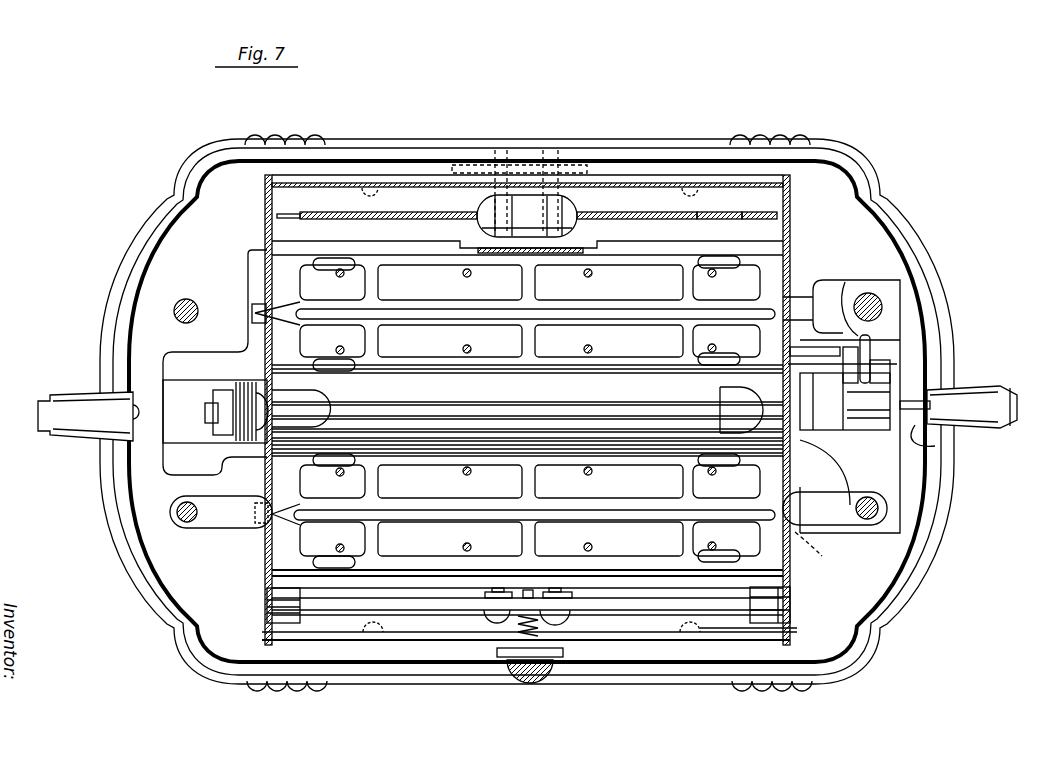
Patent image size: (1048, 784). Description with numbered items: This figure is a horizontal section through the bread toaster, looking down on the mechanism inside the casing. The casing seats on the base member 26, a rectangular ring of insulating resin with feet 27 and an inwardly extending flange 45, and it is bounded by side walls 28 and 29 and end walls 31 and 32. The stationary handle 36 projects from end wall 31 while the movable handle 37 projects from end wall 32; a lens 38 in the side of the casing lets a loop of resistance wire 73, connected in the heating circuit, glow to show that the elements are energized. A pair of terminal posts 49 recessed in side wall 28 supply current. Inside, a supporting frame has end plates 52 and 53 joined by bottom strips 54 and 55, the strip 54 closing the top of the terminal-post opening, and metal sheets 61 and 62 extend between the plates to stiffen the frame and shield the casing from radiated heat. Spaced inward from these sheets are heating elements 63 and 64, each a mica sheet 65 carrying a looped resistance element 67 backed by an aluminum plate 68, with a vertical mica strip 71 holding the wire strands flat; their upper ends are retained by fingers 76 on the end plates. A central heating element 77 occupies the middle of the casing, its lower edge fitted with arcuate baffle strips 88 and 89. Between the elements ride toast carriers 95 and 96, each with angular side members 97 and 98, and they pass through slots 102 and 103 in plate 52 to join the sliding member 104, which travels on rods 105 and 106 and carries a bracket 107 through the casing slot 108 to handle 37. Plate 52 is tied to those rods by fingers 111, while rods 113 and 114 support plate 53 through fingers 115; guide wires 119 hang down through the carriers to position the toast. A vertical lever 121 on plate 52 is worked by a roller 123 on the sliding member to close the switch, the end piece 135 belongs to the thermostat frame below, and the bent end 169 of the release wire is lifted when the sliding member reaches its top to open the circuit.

The base member 26 is at (410, 684).
The feet 27 is at (318, 133).
The side wall 28 is at (620, 160).
The side wall 29 is at (630, 663).
The end wall 31 is at (112, 335).
The end wall 32 is at (927, 316).
The handle 36 is at (88, 416).
The handle 37 is at (980, 392).
The lens 38 is at (530, 678).
The flange 45 is at (215, 362).
The terminal posts 49 is at (552, 150).
The end plate 52 is at (790, 238).
The end plate 53 is at (265, 234).
The bottom strip 54 is at (722, 192).
The bottom strip 55 is at (718, 627).
The metal sheet 61 is at (397, 183).
The metal sheet 62 is at (350, 642).
The heating element 63 is at (440, 212).
The heating element 64 is at (352, 604).
The mica sheet 65 is at (650, 220).
The resistance element 67 is at (700, 222).
The metal plate 68 is at (608, 214).
The mica strip 71 is at (578, 226).
The loop of resistance wire 73 is at (560, 632).
The fingers 76 is at (778, 593).
The central heating element 77 is at (425, 410).
The baffle strip 88 is at (495, 430).
The baffle strip 89 is at (527, 418).
The toast carrier 95 is at (710, 306).
The toast carrier 96 is at (728, 512).
The side member 97 is at (522, 284).
The side member 98 is at (522, 344).
The slot 102 is at (790, 290).
The slot 103 is at (812, 546).
The sliding member 104 is at (900, 480).
The rod 105 is at (872, 296).
The rod 106 is at (855, 509).
The bracket 107 is at (935, 447).
The slot 108 is at (930, 406).
The fingers 111 is at (860, 525).
The rod 113 is at (188, 522).
The rod 114 is at (184, 323).
The fingers 115 is at (221, 512).
The guide wires 119 is at (590, 345).
The lever 121 is at (812, 348).
The roller 123 is at (945, 356).
The end piece 135 is at (228, 440).
The bent end 169 is at (870, 348).